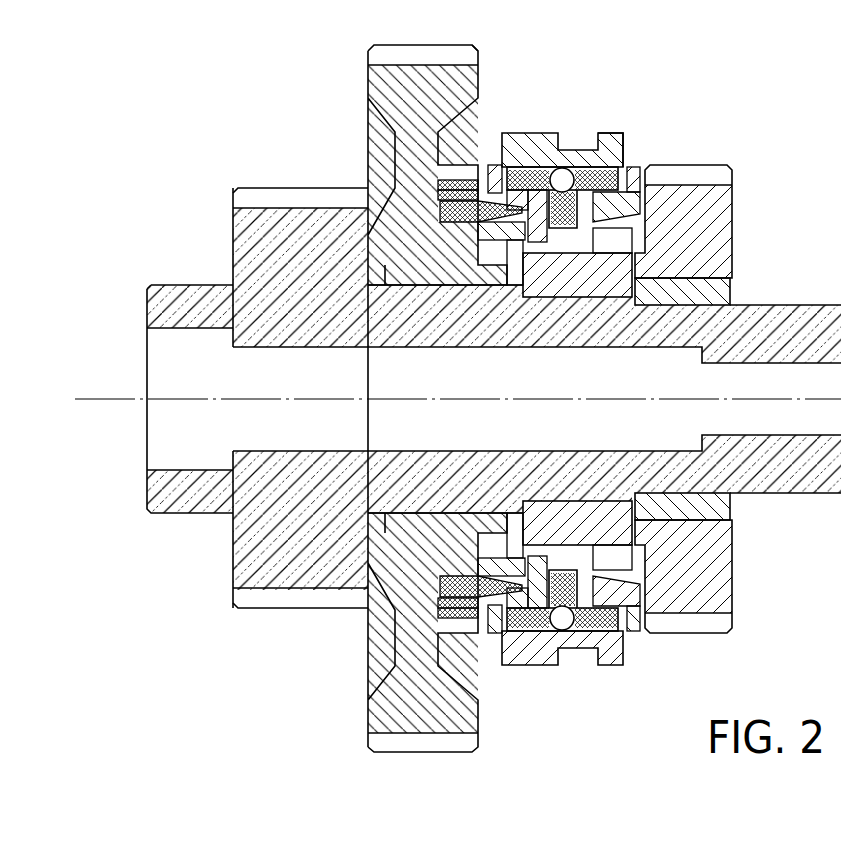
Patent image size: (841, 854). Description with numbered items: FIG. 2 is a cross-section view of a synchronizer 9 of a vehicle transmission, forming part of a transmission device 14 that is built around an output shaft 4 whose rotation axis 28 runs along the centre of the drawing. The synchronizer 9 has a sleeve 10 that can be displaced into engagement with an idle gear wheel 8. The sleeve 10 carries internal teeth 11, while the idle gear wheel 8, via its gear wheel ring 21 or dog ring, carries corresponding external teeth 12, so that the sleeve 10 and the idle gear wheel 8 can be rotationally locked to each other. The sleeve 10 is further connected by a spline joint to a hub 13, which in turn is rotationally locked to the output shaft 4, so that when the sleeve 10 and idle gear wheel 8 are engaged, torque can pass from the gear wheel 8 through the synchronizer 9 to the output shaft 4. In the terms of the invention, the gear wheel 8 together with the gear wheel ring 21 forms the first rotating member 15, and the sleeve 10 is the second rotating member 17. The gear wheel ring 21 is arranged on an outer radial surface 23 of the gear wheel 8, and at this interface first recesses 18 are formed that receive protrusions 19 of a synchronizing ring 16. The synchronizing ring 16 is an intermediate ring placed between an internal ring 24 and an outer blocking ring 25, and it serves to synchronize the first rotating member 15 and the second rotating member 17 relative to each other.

The output shaft 4 is at (163, 288).
The idle gear wheel 8 is at (395, 88).
The synchronizer 9 is at (676, 46).
The sleeve 10 is at (618, 132).
The internal teeth 11 is at (533, 648).
The external teeth 12 is at (481, 186).
The hub 13 is at (633, 272).
The transmission device 14 is at (546, 119).
The first rotating member 15 is at (490, 46).
The synchronizing ring 16 is at (445, 212).
The second rotating member 17 is at (568, 124).
The first recesses 18 is at (440, 197).
The protrusions 19 is at (440, 185).
The gear wheel ring 21 is at (470, 625).
The outer radial surface 23 is at (470, 592).
The internal ring 24 is at (438, 584).
The outer blocking ring 25 is at (511, 650).
The rotation axis 28 is at (100, 398).